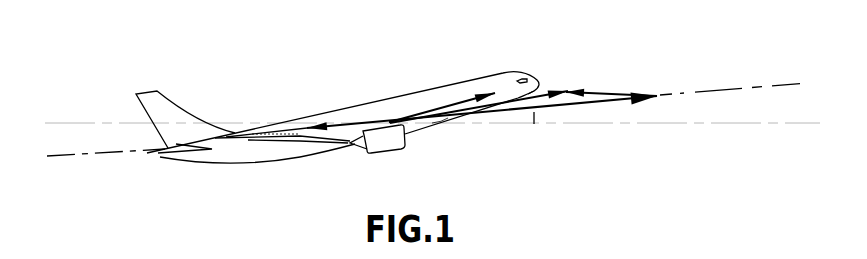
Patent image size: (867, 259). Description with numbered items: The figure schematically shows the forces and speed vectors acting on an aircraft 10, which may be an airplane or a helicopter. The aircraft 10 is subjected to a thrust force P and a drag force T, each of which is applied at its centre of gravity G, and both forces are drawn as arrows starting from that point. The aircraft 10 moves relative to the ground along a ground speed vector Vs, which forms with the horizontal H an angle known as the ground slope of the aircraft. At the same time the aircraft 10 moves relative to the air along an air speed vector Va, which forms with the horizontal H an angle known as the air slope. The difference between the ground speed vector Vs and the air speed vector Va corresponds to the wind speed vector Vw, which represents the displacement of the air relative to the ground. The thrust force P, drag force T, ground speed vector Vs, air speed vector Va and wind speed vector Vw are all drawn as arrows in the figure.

The aircraft 10 is at (316, 73).
The center of gravity G is at (388, 117).
The thrust vector P is at (457, 88).
The drag vector T is at (349, 145).
The ground speed vector Vs is at (523, 18).
The air speed vector Va is at (578, 110).
The wind speed vector Vw is at (615, 23).
The horizontal reference line H is at (722, 124).